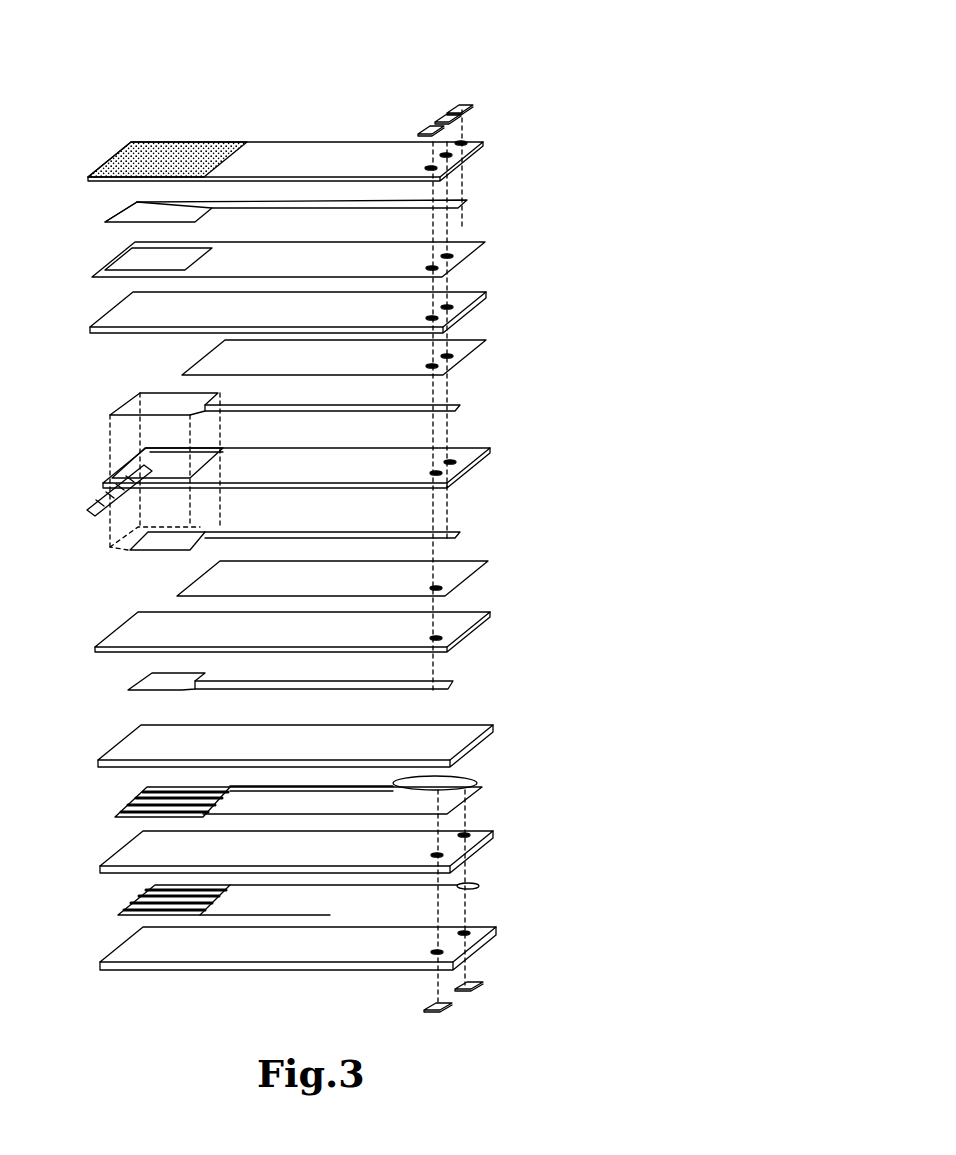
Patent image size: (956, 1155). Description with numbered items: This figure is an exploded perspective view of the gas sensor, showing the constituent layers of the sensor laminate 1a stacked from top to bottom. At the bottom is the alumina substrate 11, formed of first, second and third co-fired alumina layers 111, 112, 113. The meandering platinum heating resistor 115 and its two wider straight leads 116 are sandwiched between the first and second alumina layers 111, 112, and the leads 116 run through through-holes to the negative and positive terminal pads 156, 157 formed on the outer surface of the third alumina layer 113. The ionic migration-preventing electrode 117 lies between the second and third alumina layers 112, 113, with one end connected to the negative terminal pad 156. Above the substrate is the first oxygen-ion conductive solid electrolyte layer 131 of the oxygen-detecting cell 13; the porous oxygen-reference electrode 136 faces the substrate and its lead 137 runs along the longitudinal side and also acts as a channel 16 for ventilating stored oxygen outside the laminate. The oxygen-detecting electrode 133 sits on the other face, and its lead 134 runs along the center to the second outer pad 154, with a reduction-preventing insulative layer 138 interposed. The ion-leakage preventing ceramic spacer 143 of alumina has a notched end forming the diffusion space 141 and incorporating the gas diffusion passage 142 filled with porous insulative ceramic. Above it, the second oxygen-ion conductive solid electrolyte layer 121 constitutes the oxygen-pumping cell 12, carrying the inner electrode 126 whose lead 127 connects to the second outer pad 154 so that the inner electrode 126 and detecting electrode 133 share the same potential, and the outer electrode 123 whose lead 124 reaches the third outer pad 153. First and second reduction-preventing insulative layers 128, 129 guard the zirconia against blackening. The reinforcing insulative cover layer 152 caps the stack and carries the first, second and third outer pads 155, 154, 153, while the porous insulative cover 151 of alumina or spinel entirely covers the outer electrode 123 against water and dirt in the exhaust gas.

The sensor laminate 1a is at (508, 70).
The alumina substrate 11 is at (543, 710).
The oxygen-pumping cell 12 is at (536, 196).
The oxygen-detecting cell 13 is at (540, 695).
The channel 16 is at (324, 675).
The first alumina layer 111 is at (122, 744).
The second alumina layer 112 is at (122, 848).
The third alumina layer 113 is at (122, 946).
The heating resistor 115 is at (140, 794).
The leads of the heating resistor 116 is at (484, 782).
The ionic migration-preventing electrode 117 is at (114, 898).
The second oxygen-ion conductive solid electrolyte layer 121 is at (118, 318).
The outer electrode 123 is at (195, 215).
The lead 124 is at (318, 201).
The inner electrode 126 is at (218, 393).
The lead 127 is at (335, 403).
The first reduction-preventing insulative layer 128 is at (478, 342).
The second reduction-preventing insulative layer 129 is at (484, 242).
The first oxygen-ion conductive solid electrolyte layer 131 is at (118, 630).
The oxygen-detecting electrode 133 is at (196, 526).
The lead 134 is at (325, 536).
The reference electrode 136 is at (196, 676).
The lead 137 is at (302, 683).
The reduction-preventing insulative layer 138 is at (470, 588).
The diffusion space 141 is at (137, 460).
The gas diffusion passage 142 is at (97, 505).
The ion-leakage preventing ceramic spacer 143 is at (340, 450).
The porous insulative cover 151 is at (202, 142).
The reinforcing insulative cover layer 152 is at (328, 143).
The third outer pad 153 is at (450, 108).
The second outer pad 154 is at (434, 120).
The first outer pad 155 is at (418, 130).
The negative terminal pad 156 is at (478, 990).
The positive terminal pad 157 is at (424, 1008).